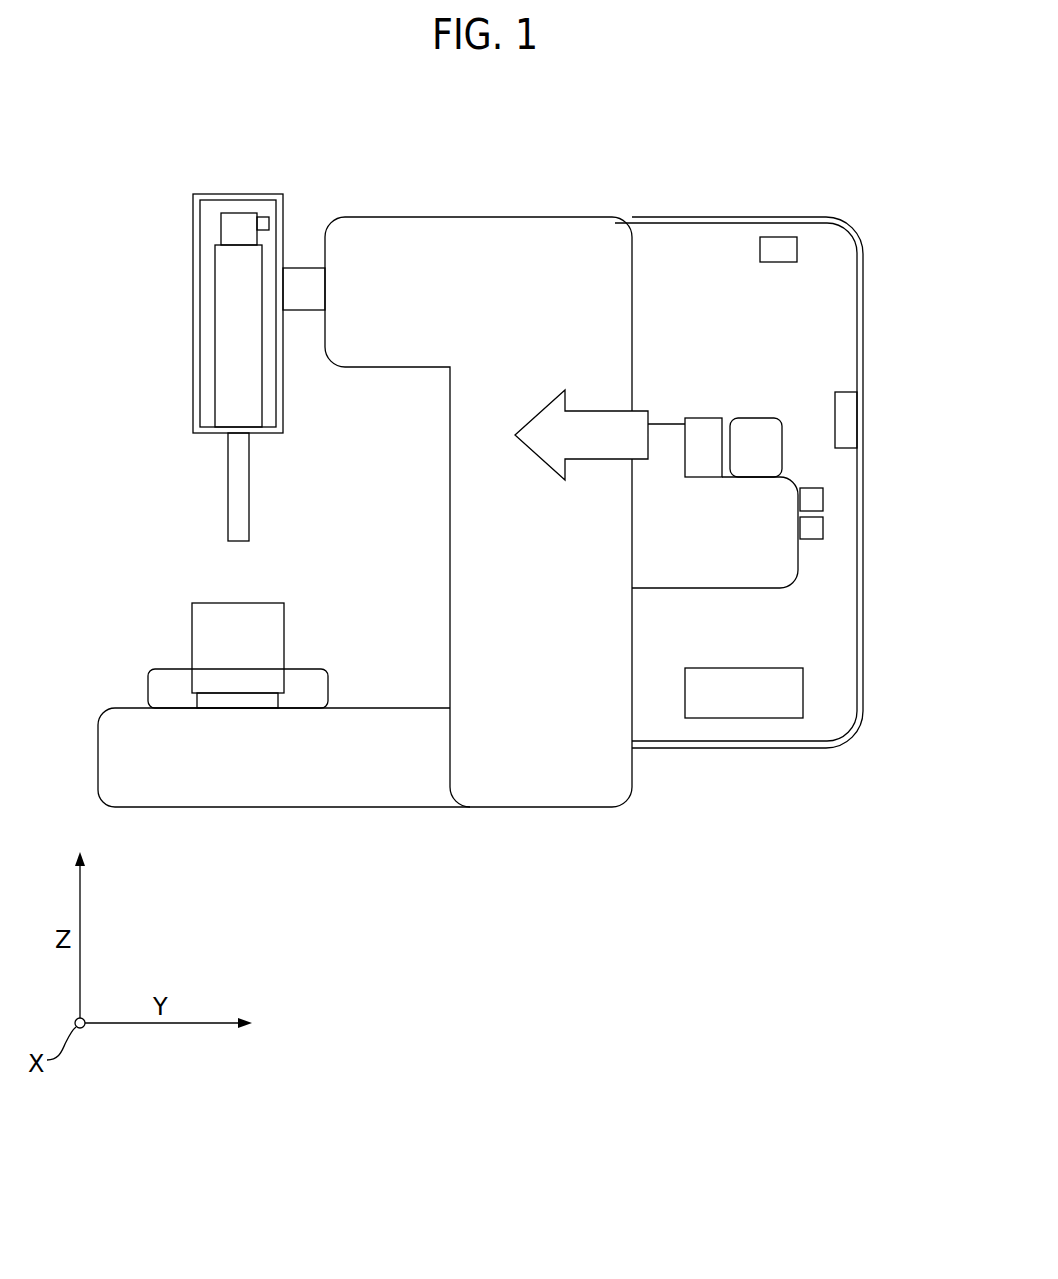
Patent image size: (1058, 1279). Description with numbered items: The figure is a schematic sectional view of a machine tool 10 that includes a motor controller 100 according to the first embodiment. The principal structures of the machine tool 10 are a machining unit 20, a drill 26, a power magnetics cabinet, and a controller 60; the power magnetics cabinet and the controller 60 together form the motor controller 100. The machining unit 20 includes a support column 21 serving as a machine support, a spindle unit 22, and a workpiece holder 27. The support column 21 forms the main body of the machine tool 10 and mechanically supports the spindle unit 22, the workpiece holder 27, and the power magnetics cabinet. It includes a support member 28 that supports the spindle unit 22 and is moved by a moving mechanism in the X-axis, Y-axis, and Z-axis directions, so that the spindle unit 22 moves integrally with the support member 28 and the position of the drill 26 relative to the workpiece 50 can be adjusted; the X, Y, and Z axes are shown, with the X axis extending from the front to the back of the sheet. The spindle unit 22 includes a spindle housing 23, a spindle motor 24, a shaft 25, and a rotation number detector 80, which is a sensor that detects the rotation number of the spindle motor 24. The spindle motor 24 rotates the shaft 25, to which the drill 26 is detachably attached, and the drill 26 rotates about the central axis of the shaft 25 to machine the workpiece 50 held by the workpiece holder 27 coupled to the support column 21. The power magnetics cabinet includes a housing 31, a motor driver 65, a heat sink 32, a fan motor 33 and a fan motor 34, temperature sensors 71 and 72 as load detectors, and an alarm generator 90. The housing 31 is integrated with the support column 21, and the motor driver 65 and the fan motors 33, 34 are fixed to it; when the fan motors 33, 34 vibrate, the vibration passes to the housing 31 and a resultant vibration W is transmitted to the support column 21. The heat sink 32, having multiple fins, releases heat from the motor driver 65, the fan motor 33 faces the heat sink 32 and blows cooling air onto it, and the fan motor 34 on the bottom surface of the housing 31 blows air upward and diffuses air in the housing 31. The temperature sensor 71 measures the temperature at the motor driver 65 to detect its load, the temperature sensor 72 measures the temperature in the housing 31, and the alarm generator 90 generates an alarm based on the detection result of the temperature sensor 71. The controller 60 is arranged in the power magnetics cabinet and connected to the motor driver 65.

The machine tool 10 is at (779, 181).
The machining unit 20 is at (530, 193).
The support column 21 is at (469, 256).
The spindle unit 22 is at (190, 209).
The spindle housing 23 is at (193, 230).
The spindle motor 24 is at (238, 232).
The shaft 25 is at (215, 357).
The drill 26 is at (240, 475).
The workpiece holder 27 is at (148, 677).
The support member 28 is at (302, 270).
The housing 31 is at (634, 217).
The heat sink 32 is at (702, 447).
The fan motor 33 is at (773, 443).
The fan motor 34 is at (760, 718).
The workpiece 50 is at (192, 642).
The controller 60 is at (847, 408).
The motor driver 65 is at (802, 547).
The temperature sensor 71 is at (812, 498).
The temperature sensor 72 is at (780, 252).
The rotation number detector 80 is at (265, 213).
The alarm generator 90 is at (812, 530).
The motor controller 100 is at (727, 118).